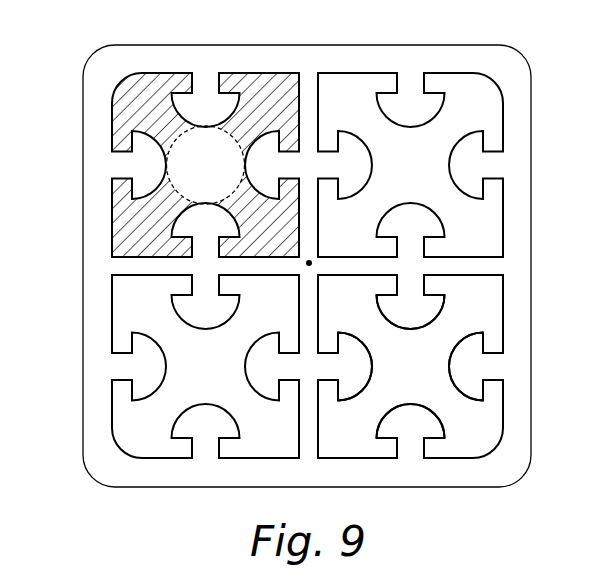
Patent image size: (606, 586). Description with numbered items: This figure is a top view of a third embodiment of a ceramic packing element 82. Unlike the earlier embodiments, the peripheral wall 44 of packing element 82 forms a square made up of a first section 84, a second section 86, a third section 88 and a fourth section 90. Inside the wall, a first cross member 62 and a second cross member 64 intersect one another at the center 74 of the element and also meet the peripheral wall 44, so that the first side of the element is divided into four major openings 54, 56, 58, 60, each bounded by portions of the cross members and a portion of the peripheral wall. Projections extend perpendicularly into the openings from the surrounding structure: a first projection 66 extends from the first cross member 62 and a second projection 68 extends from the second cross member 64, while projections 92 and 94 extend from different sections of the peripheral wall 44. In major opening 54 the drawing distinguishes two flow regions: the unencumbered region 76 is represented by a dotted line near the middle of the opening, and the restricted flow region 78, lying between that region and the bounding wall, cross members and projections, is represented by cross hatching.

The peripheral wall 44 is at (246, 44).
The ceramic packing element 82 is at (73, 82).
The first section 84 is at (190, 52).
The second section 86 is at (520, 320).
The third section 88 is at (173, 474).
The fourth section 90 is at (88, 242).
The major opening 54 is at (282, 112).
The major opening 56 is at (483, 114).
The major opening 58 is at (483, 312).
The major opening 60 is at (282, 313).
The first cross member 62 is at (462, 258).
The second cross member 64 is at (310, 110).
The first projection 66 is at (395, 313).
The second projection 68 is at (353, 382).
The center 74 is at (309, 263).
The unencumbered region 76 is at (180, 135).
The restricted flow region 78 is at (137, 218).
The projection 92 is at (457, 357).
The projection 94 is at (427, 417).